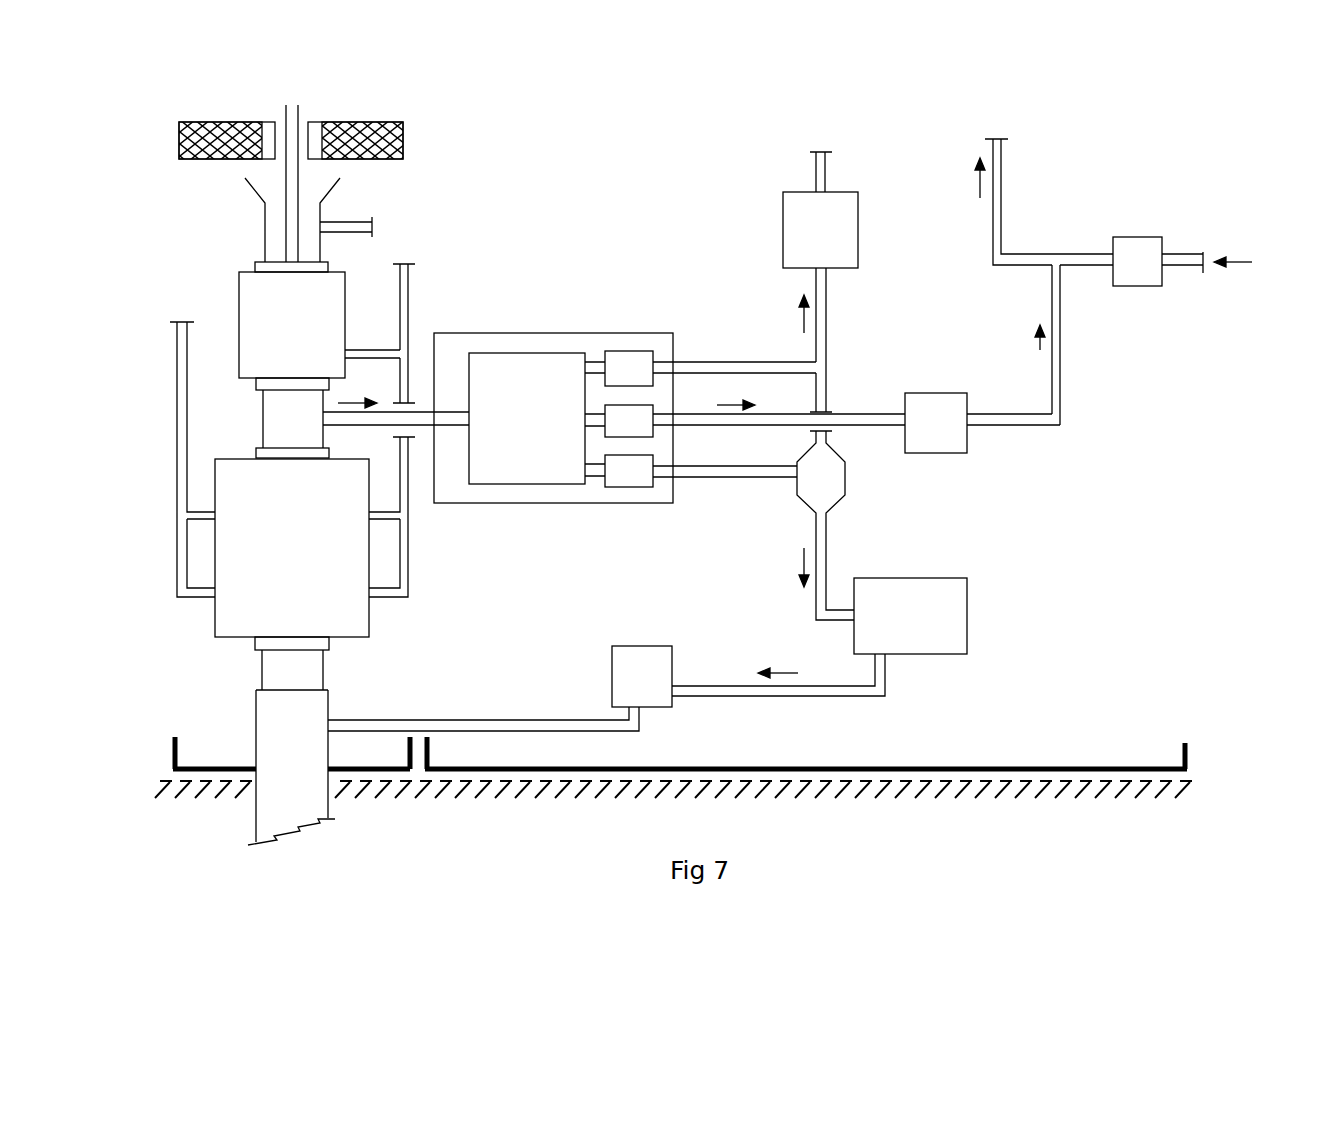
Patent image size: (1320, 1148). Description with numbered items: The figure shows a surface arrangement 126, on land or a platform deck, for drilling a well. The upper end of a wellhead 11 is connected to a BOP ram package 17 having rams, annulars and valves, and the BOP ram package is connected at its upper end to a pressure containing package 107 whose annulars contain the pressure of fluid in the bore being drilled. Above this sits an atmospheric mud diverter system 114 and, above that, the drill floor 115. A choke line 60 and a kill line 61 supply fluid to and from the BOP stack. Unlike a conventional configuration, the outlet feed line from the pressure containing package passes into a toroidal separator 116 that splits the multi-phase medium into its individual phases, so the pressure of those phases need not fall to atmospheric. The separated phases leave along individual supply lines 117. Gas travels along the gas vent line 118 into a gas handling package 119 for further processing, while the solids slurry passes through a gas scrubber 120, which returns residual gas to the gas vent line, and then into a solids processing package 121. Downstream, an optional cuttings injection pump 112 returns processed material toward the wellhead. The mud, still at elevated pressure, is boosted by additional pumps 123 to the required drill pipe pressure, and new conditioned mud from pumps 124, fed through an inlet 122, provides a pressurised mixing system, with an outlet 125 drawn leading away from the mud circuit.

The wellhead 11 is at (256, 712).
The BOP ram package 17 is at (215, 620).
The choke line 60 is at (177, 348).
The kill line 61 is at (408, 283).
The pressure containing package 107 is at (239, 283).
The cuttings injection pump 112 is at (645, 645).
The atmospheric mud diverter system 114 is at (385, 197).
The drill floor 115 is at (403, 141).
The toroidal separator 116 is at (527, 353).
The individual supply lines 117 is at (594, 465).
The gas vent line 118 is at (826, 312).
The gas handling package 119 is at (858, 218).
The choke 120 is at (845, 480).
The solids processing package 121 is at (966, 591).
The gas inlet 122 is at (1177, 270).
The additional pumps 123 is at (967, 438).
The pumps 124 is at (1140, 237).
The outlet 125 is at (1044, 185).
The surface arrangement 126 is at (1197, 780).